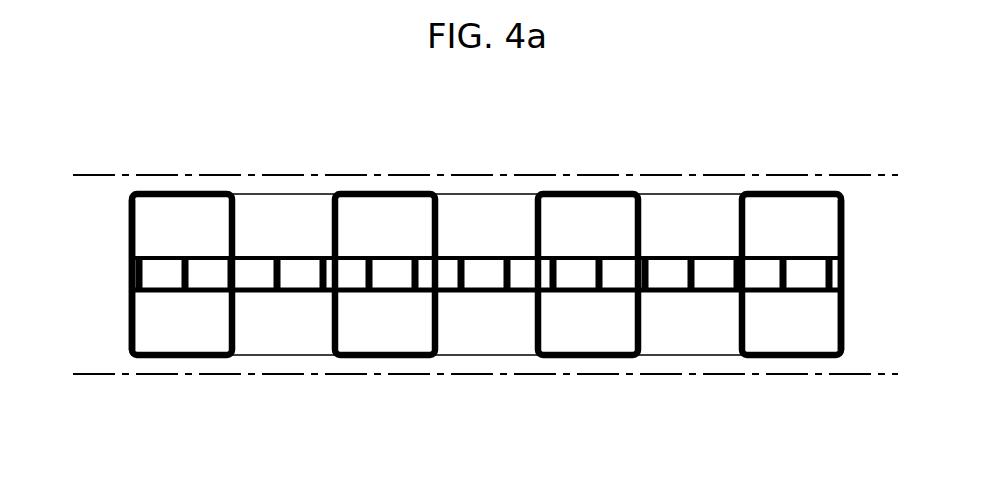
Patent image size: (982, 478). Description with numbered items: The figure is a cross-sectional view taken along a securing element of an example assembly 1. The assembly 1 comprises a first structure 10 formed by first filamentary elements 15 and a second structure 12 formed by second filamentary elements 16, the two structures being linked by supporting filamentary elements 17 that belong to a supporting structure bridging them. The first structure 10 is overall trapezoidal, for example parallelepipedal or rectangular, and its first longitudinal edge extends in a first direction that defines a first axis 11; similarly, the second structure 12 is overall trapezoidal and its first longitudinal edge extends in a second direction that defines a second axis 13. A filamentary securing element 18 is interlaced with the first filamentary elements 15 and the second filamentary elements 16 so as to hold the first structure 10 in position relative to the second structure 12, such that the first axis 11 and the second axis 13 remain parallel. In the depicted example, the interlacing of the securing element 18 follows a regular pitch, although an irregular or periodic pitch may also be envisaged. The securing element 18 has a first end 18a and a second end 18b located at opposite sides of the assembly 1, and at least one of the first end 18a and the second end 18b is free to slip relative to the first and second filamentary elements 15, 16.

The assembly 1 is at (486, 251).
The first structure 10 is at (393, 217).
The first axis 11 is at (815, 175).
The second structure 12 is at (787, 332).
The second axis 13 is at (815, 377).
The first filamentary elements 15 is at (277, 193).
The second filamentary elements 16 is at (382, 355).
The supporting filamentary elements 17 is at (227, 277).
The filamentary securing element 18 is at (230, 317).
The first end 18a is at (128, 360).
The second end 18b is at (840, 358).